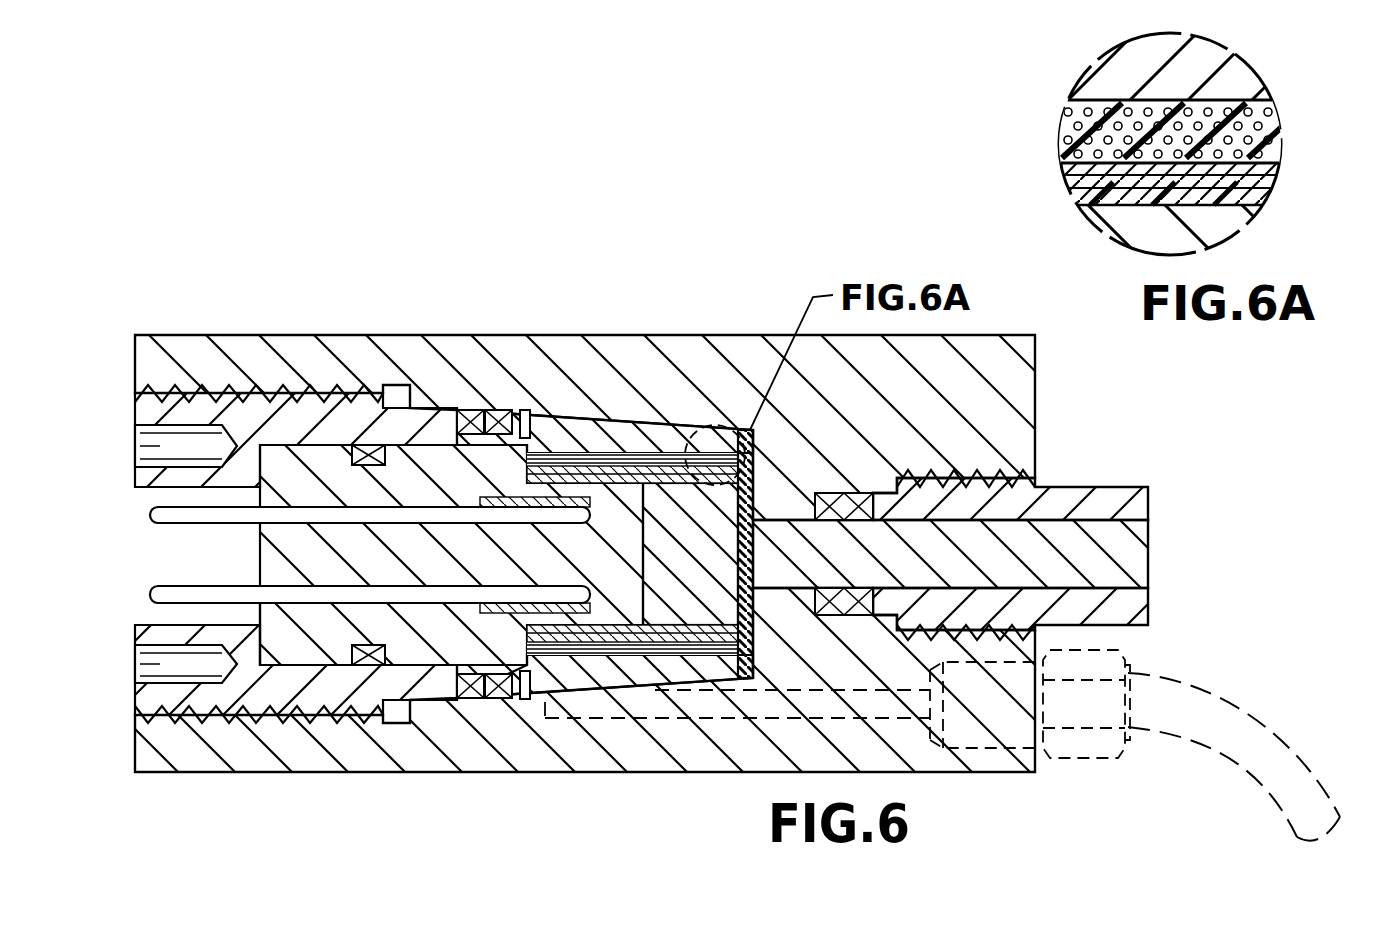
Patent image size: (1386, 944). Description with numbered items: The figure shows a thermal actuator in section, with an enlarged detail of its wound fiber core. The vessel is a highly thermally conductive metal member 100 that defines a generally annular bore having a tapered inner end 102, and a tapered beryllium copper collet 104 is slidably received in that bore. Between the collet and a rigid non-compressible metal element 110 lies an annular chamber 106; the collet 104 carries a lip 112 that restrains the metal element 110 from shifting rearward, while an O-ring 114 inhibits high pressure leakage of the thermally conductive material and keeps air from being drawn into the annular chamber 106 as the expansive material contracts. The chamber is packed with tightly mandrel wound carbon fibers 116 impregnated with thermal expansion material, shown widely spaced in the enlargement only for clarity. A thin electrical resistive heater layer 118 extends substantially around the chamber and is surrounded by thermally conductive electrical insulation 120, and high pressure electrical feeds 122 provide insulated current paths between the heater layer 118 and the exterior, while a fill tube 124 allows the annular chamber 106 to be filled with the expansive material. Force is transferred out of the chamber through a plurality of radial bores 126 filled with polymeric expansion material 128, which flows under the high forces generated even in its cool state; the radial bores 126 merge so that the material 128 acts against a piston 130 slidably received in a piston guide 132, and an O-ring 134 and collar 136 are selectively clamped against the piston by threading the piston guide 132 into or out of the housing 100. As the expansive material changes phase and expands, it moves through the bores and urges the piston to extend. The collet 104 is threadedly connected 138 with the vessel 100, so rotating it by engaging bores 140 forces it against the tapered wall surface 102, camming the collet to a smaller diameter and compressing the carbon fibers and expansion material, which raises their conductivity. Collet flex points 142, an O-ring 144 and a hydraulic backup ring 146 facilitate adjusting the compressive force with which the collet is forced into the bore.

In FIG. 6, the thermally conductive metal member 100 is at (952, 774).
In FIG. 6, the tapered inner end 102 is at (597, 686).
In FIG. 6, the tapered beryllium copper collet 104 is at (649, 418).
In FIG. 6, the annular chamber 106 is at (755, 665).
In FIG. 6, the rigid non-compressible metal element 110 is at (410, 650).
In FIG. 6, the lip 112 is at (318, 447).
In FIG. 6, the O-ring 114 is at (370, 445).
In FIG. 6, the carbon fibers 116 is at (632, 554).
In FIG. 6A, the carbon fibers 116 is at (1273, 117).
In FIG. 6, the electrical resistive heater layer 118 is at (632, 474).
In FIG. 6A, the electrical resistive heater layer 118 is at (1072, 182).
In FIG. 6, the thermally conductive electrical insulation 120 is at (632, 633).
In FIG. 6A, the thermally conductive electrical insulation 120 is at (1253, 194).
In FIG. 6, the high pressure electrical feeds 122 is at (162, 513).
In FIG. 6, the fill tube 124 is at (1040, 703).
In FIG. 6, the radial bores 126 is at (753, 553).
In FIG. 6, the polymeric expansion material 128 is at (632, 553).
In FIG. 6A, the polymeric expansion material 128 is at (1280, 146).
In FIG. 6, the piston 130 is at (1152, 551).
In FIG. 6, the piston guide 132 is at (1077, 485).
In FIG. 6, the O-ring 134 is at (842, 622).
In FIG. 6, the collar 136 is at (864, 490).
In FIG. 6, the threaded connection 138 is at (185, 718).
In FIG. 6, the bores 140 is at (165, 440).
In FIG. 6, the collet flex points 142 is at (632, 475).
In FIG. 6, the O-ring 144 is at (527, 398).
In FIG. 6, the hydraulic backup ring 146 is at (490, 408).